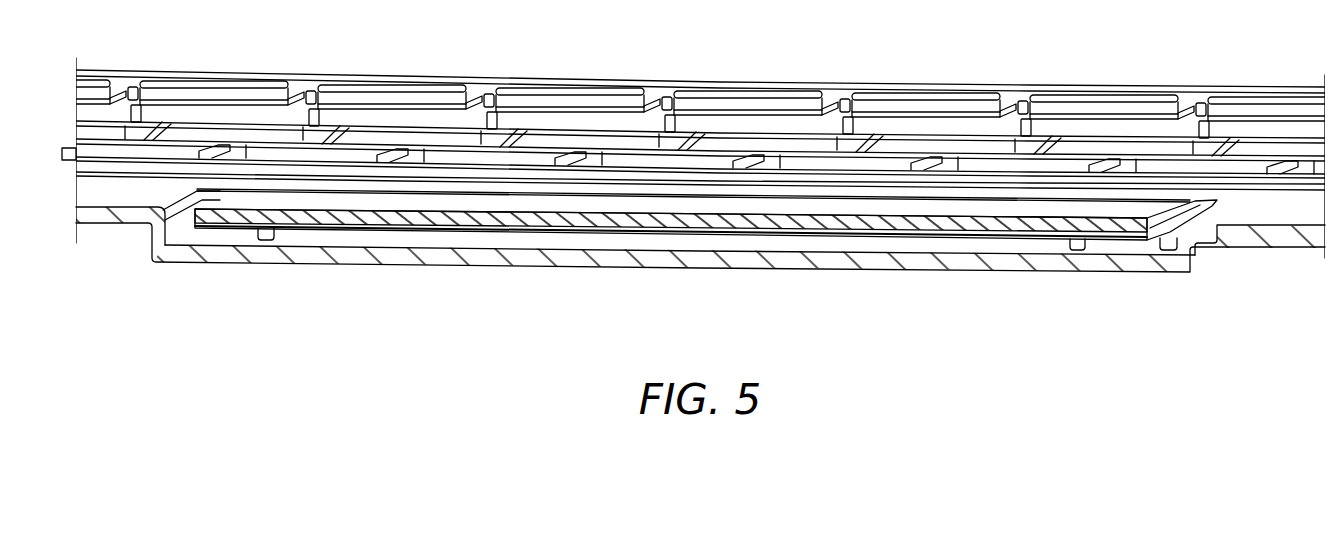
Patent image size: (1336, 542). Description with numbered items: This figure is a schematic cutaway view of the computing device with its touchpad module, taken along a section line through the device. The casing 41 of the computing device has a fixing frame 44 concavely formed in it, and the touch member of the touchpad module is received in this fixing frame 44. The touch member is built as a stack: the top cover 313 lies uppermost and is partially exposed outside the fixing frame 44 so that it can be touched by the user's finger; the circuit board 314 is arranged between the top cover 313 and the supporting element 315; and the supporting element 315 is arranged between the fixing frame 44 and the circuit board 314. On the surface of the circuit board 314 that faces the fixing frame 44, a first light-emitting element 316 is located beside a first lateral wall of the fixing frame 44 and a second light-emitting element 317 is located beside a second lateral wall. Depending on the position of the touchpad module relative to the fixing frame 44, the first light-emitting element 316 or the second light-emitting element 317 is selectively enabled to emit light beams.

The casing 41 is at (1272, 238).
The fixing frame 44 is at (903, 263).
The top cover 313 is at (737, 223).
The circuit board 314 is at (599, 236).
The supporting element 315 is at (1166, 250).
The first light-emitting element 316 is at (265, 243).
The second light-emitting element 317 is at (1078, 248).